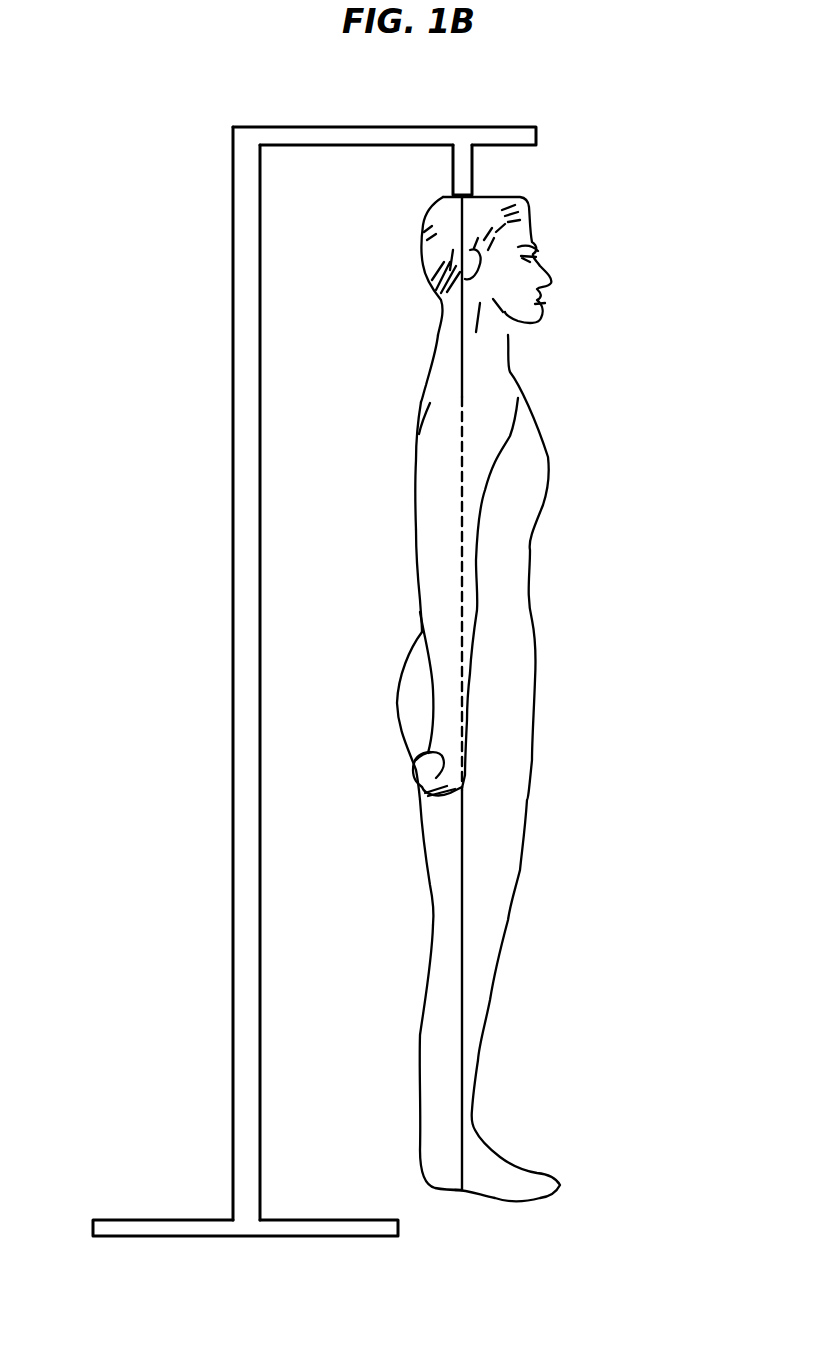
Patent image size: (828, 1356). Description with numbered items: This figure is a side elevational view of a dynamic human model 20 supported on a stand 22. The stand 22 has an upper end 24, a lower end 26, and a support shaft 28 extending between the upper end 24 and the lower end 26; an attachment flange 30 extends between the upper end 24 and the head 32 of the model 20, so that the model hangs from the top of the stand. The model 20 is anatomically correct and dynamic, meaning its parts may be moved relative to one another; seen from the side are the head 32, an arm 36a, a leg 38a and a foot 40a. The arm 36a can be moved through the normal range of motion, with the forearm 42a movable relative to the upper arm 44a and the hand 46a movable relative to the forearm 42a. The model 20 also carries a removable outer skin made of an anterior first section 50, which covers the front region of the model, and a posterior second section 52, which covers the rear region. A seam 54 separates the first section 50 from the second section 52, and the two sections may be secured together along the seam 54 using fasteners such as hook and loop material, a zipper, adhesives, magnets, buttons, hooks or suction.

The dynamic human model 20 is at (693, 358).
The stand 22 is at (212, 167).
The upper end 24 is at (318, 136).
The lower end 26 is at (133, 1227).
The support shaft 28 is at (247, 803).
The attachment flange 30 is at (460, 177).
The head 32 is at (437, 252).
The arm 36a is at (431, 570).
The leg 38a is at (440, 848).
The foot 40a is at (428, 1160).
The forearm 42a is at (438, 643).
The upper arm 44a is at (433, 487).
The hand 46a is at (432, 757).
The first section 50 is at (538, 463).
The second section 52 is at (437, 380).
The seam 54 is at (462, 945).